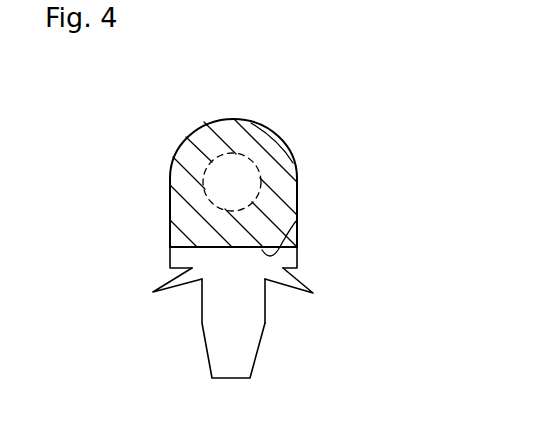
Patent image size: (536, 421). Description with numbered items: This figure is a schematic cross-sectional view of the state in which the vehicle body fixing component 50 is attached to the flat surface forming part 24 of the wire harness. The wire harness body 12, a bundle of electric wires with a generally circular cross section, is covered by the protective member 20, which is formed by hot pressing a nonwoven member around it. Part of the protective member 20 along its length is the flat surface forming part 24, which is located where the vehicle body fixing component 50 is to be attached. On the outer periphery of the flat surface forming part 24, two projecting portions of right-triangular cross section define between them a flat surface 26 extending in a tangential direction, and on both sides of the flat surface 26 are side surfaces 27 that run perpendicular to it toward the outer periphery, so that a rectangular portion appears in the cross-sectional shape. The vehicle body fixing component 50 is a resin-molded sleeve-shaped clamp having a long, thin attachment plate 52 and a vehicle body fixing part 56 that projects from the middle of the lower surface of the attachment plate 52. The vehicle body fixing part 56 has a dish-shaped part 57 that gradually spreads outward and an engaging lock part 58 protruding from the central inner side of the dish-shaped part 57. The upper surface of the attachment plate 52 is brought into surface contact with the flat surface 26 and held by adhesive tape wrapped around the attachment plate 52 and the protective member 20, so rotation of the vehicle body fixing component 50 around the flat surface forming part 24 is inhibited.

The protective member 20 is at (255, 118).
The flat surface forming part 24 is at (188, 138).
The wire harness body 12 is at (262, 130).
The side surfaces 27 is at (170, 228).
The flat surface 26 is at (297, 220).
The attachment plate 52 is at (297, 258).
The dish-shaped part 57 is at (300, 280).
The vehicle body fixing component 50 is at (276, 309).
The engaging lock part 58 is at (218, 335).
The vehicle body fixing part 56 is at (272, 346).